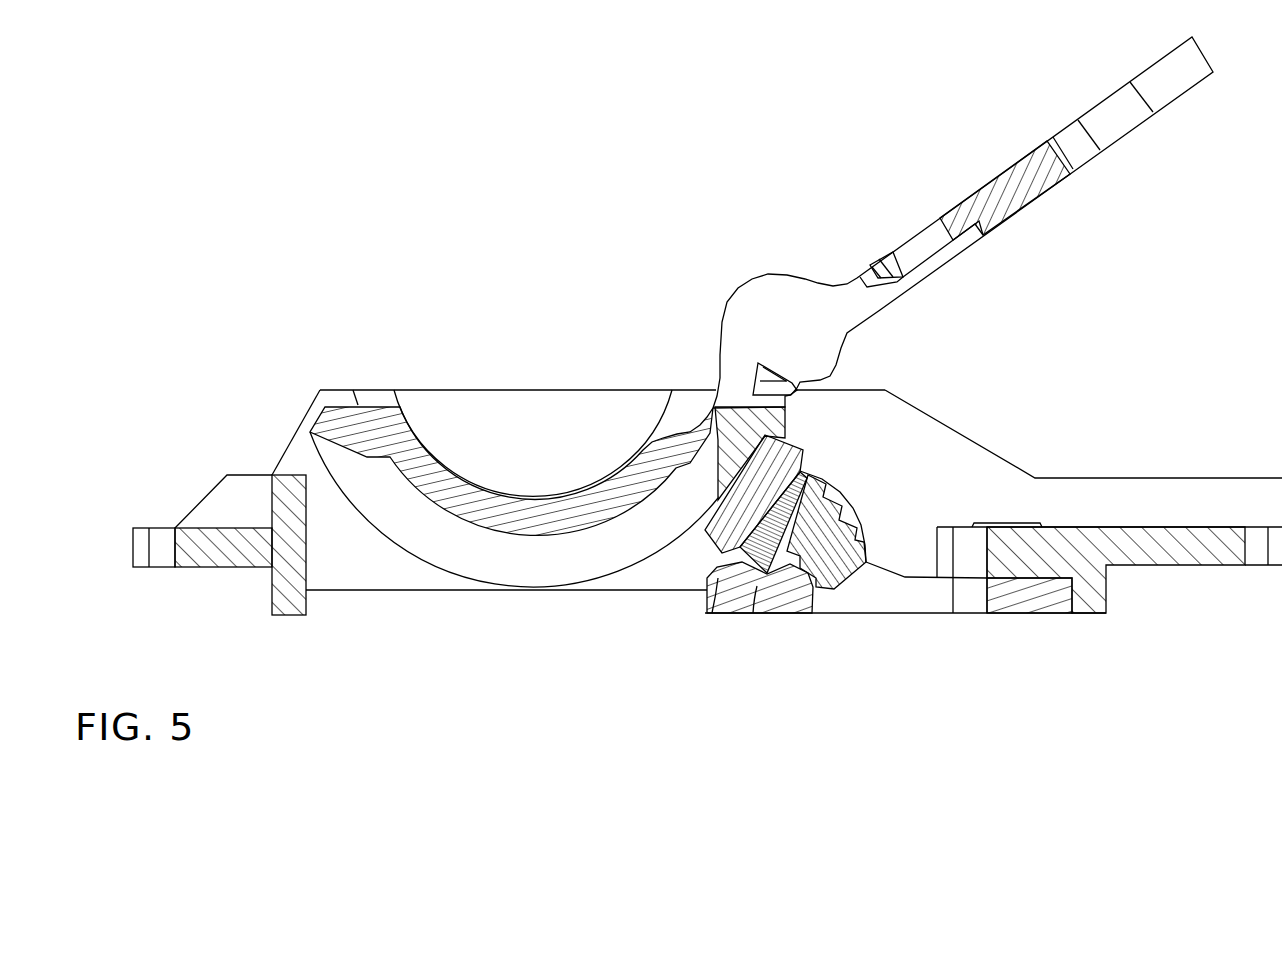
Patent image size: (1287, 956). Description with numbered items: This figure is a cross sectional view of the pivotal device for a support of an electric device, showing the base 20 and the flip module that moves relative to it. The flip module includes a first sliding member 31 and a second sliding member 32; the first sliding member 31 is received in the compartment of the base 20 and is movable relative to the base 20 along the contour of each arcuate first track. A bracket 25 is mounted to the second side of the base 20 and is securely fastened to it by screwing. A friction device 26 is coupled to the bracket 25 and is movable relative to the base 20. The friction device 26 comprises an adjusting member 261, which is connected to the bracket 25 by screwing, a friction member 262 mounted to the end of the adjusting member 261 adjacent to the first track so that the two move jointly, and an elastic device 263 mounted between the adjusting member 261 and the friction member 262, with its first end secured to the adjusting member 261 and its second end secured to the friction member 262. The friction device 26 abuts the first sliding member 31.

The base 20 is at (320, 338).
The first sliding member 31 is at (452, 632).
The second sliding member 32 is at (822, 238).
The bracket 25 is at (760, 612).
The friction device 26 is at (762, 574).
The adjusting member 261 is at (818, 613).
The friction member 262 is at (735, 578).
The elastic device 263 is at (740, 600).